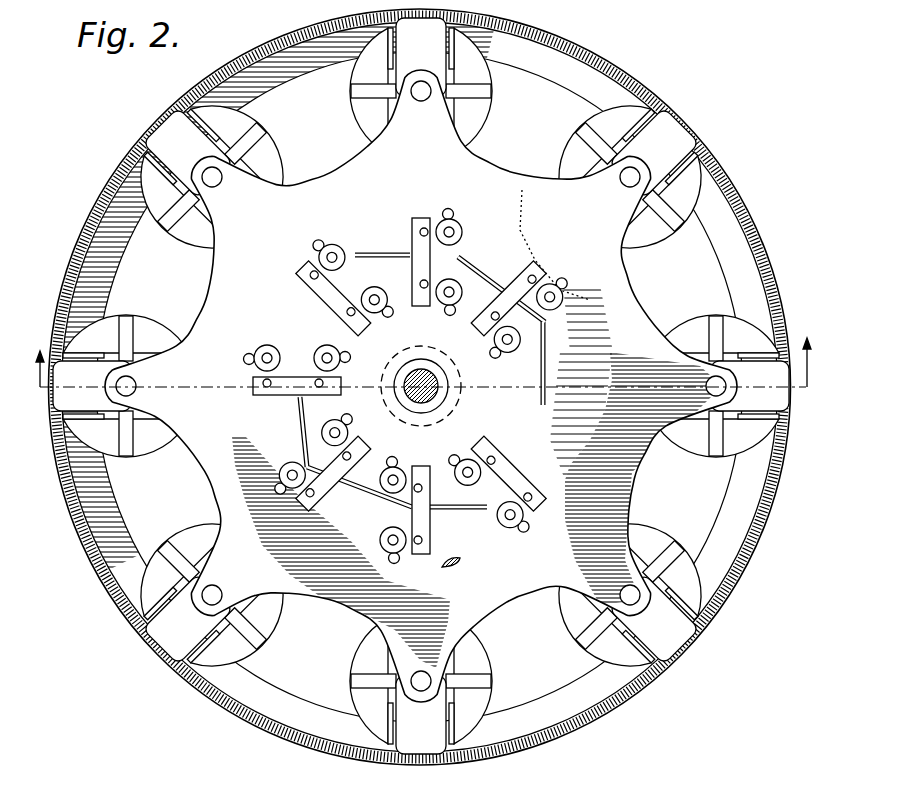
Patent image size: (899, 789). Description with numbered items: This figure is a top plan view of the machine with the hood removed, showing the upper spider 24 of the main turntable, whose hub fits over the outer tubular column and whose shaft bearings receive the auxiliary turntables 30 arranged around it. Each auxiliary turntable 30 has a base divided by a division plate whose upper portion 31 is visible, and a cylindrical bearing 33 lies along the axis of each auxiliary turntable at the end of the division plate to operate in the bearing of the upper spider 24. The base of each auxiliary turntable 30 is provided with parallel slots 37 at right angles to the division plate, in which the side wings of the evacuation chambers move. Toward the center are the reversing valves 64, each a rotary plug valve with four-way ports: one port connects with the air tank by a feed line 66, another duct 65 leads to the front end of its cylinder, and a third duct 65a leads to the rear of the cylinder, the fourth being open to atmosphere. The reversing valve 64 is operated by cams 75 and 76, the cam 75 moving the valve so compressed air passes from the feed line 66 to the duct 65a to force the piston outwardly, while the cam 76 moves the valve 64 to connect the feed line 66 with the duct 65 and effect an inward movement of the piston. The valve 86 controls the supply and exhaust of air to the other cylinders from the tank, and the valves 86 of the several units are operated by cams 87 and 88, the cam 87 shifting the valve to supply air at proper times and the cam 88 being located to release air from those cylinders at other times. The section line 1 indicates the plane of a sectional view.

The section line 1- 1 is at (421, 351).
The upper spider 24 is at (502, 180).
The auxiliary turntable 30 is at (375, 80).
The upper portion of division plate 31 is at (473, 91).
The cylindrical bearing 33 is at (216, 181).
The parallel slot 37 is at (684, 334).
The reversing valve 64 is at (492, 335).
The duct 65 is at (353, 322).
The duct 65a is at (378, 272).
The feed line 66 is at (333, 301).
The cam 75 is at (400, 464).
The cam 76 is at (304, 392).
The valve 86 is at (458, 234).
The cam 87 is at (480, 520).
The cam 88 is at (458, 566).